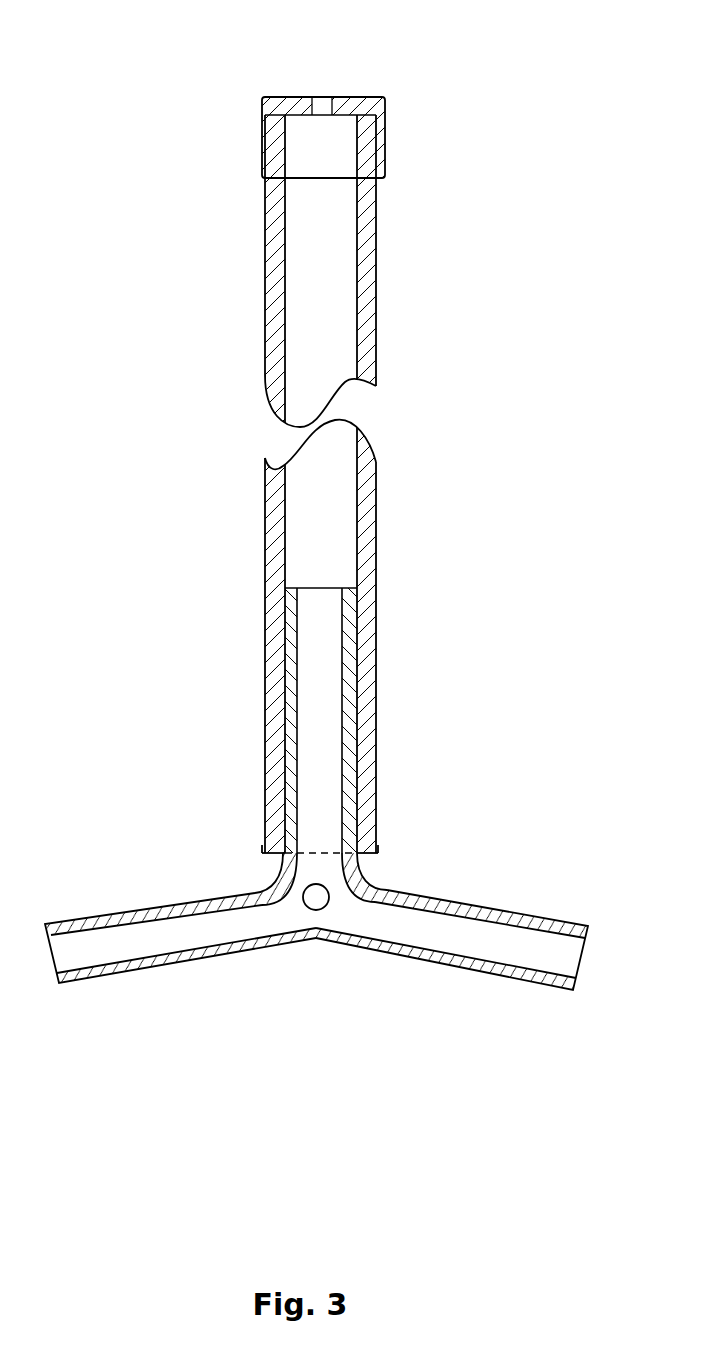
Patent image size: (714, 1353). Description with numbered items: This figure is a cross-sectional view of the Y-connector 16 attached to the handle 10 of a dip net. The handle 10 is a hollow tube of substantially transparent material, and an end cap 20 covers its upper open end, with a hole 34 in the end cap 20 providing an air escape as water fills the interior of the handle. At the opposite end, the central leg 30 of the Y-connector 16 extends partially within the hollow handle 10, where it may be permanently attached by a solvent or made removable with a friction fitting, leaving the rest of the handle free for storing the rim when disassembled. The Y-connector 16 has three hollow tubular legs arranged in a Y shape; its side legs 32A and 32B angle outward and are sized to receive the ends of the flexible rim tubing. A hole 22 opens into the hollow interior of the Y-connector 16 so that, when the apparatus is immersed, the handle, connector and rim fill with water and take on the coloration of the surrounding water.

The handle 10 is at (377, 506).
The Y-connector 16 is at (316, 949).
The end cap 20 is at (386, 140).
The hole 22 is at (329, 903).
The central leg 30 is at (314, 574).
The side leg 32A is at (163, 988).
The side leg 32B is at (453, 990).
The hole 34 is at (312, 85).